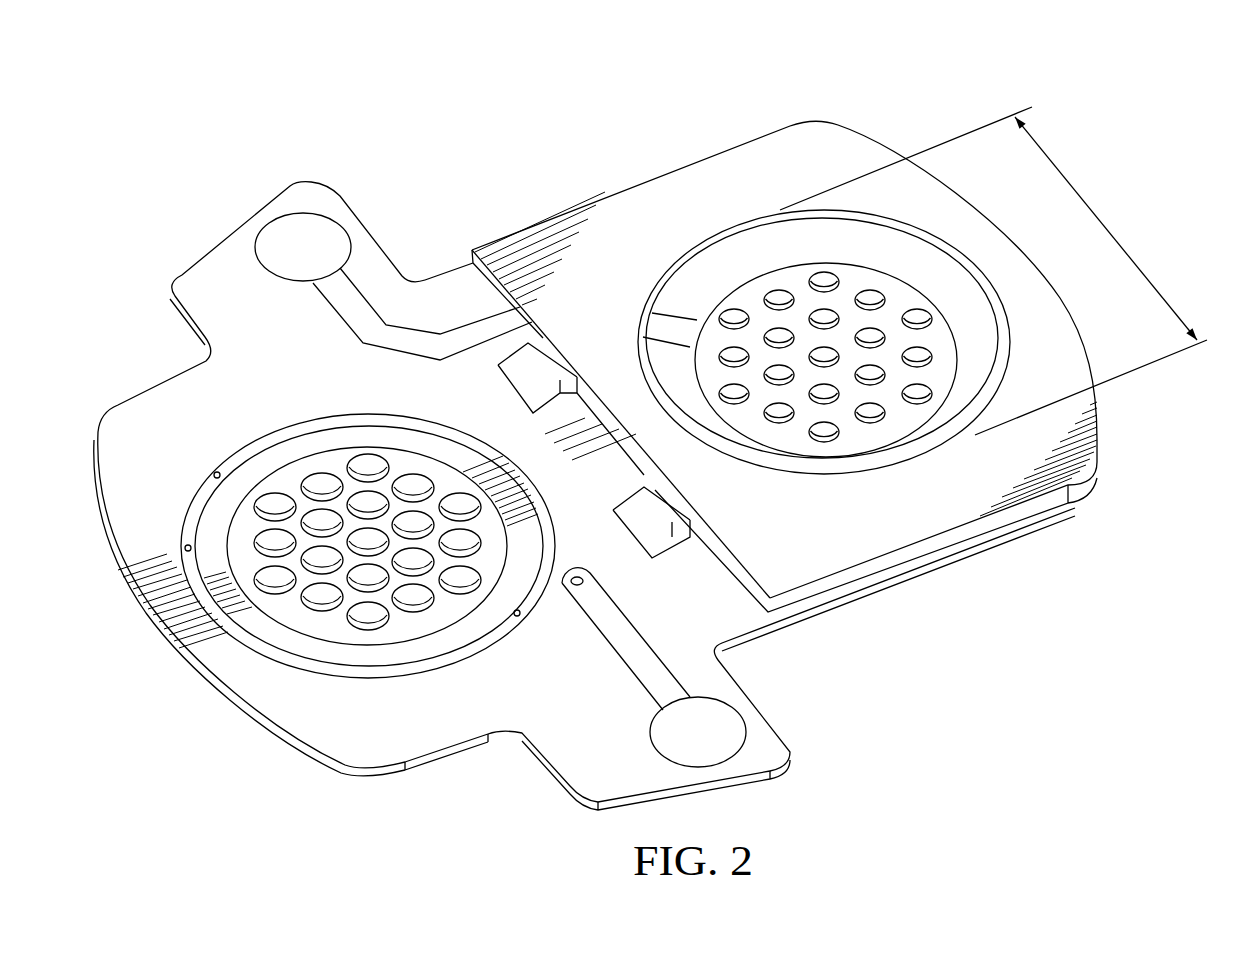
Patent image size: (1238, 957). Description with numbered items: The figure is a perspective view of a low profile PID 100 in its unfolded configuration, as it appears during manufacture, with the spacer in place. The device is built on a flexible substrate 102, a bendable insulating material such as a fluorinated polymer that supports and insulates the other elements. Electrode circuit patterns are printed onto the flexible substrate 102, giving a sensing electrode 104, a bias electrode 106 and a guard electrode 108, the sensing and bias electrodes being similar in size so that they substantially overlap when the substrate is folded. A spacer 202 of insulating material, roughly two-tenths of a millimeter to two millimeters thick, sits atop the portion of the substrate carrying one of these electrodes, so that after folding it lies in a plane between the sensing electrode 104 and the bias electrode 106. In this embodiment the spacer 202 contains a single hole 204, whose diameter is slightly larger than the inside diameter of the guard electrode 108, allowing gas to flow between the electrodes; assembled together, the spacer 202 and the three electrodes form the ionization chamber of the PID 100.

The low profile PID 100 is at (134, 110).
The flexible substrate 102 is at (266, 175).
The sensing electrode 104 is at (338, 460).
The bias electrode 106 is at (752, 297).
The guard electrode 108 is at (262, 446).
The spacer 202 is at (648, 190).
The hole 204 is at (1130, 212).